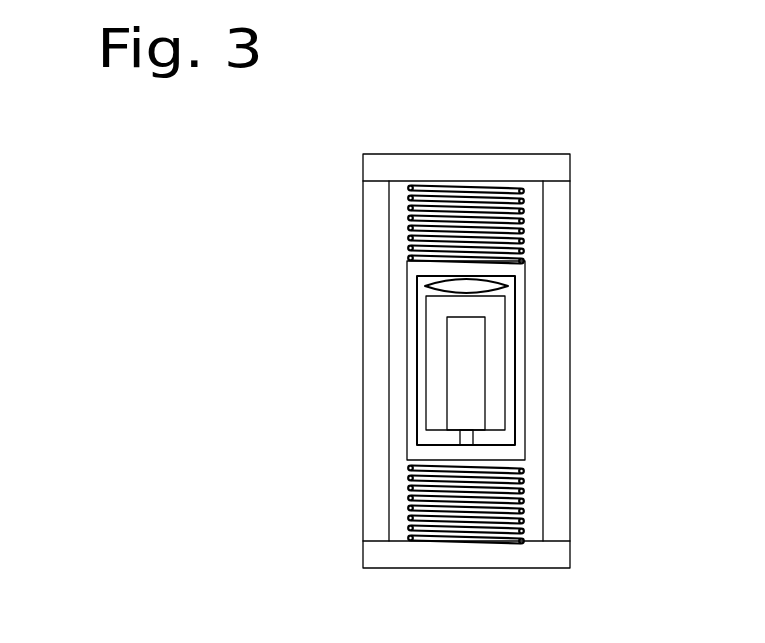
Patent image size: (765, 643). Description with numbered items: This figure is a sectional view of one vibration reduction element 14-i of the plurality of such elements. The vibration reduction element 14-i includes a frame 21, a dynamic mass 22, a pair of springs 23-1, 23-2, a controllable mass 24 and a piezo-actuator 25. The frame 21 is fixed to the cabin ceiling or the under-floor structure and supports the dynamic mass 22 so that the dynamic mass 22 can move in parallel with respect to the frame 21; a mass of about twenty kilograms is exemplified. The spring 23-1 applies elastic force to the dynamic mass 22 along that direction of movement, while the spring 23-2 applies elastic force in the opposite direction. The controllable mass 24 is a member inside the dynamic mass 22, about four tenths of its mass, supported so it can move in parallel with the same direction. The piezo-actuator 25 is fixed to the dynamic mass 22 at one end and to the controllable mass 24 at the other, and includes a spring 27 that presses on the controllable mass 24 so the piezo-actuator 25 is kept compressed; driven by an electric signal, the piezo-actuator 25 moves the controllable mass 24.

The vibration reduction element 14-i is at (558, 113).
The frame 21 is at (568, 212).
The dynamic mass 22 is at (527, 312).
The spring 23-1 is at (473, 183).
The spring 23-2 is at (457, 541).
The controllable mass 24 is at (500, 362).
The piezo-actuator 25 is at (472, 402).
The spring 27 is at (432, 281).